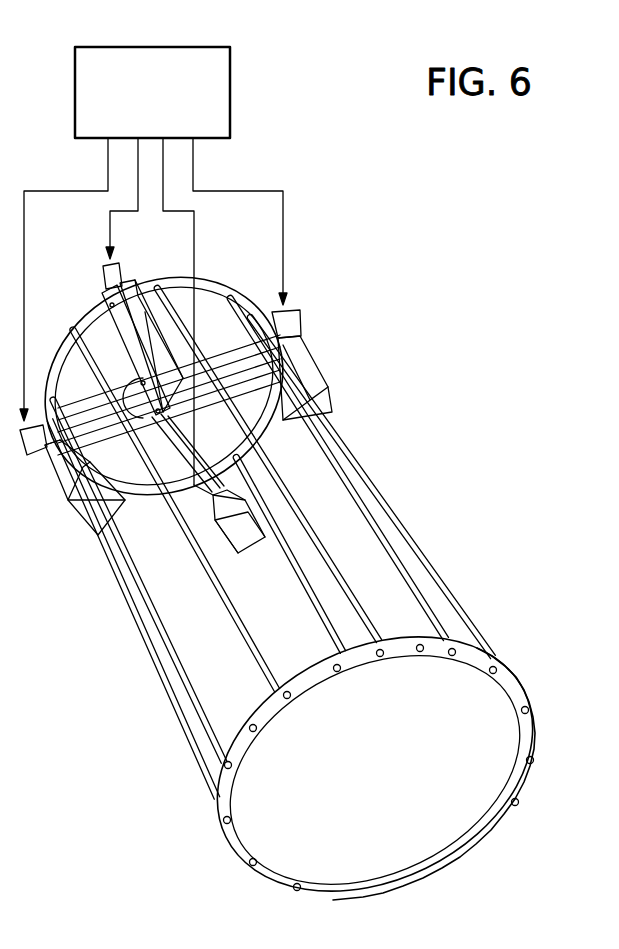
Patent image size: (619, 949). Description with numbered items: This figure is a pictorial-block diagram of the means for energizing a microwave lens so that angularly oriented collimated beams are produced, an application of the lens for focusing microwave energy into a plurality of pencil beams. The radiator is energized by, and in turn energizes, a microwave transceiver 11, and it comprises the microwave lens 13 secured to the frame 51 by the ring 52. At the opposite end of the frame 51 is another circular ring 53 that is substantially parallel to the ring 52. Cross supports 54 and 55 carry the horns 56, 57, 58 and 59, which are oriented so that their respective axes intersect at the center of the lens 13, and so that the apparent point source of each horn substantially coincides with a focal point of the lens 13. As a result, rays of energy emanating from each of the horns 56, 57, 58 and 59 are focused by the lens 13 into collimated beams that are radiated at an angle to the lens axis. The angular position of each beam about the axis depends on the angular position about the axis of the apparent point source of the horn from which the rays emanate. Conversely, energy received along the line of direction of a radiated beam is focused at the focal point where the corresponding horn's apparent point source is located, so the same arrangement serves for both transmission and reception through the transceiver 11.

The microwave transceiver 11 is at (75, 47).
The microwave lens 13 is at (412, 888).
The frame 51 is at (389, 502).
The ring 52 is at (212, 814).
The circular ring 53 is at (59, 336).
The cross support 54 is at (123, 353).
The cross support 55 is at (95, 440).
The horn 56 is at (257, 540).
The horn 57 is at (70, 506).
The horn 58 is at (135, 291).
The horn 59 is at (311, 343).